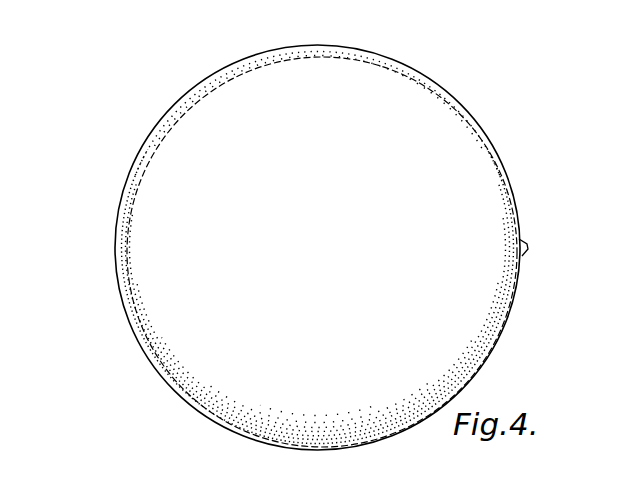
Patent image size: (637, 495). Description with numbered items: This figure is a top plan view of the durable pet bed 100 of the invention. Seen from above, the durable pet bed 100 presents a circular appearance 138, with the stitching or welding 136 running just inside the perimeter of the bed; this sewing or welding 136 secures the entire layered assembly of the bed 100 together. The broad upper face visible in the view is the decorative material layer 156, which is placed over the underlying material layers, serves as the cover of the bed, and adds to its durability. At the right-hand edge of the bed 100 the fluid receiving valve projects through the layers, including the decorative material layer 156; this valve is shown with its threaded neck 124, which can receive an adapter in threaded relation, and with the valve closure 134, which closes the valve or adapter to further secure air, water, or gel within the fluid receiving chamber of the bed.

The durable pet bed 100 is at (325, 229).
The circular appearance 138 is at (489, 75).
The stitching or welding 136 is at (480, 138).
The threaded neck 124 is at (530, 237).
The valve closure 134 is at (573, 222).
The decorative material layer 156 is at (170, 231).